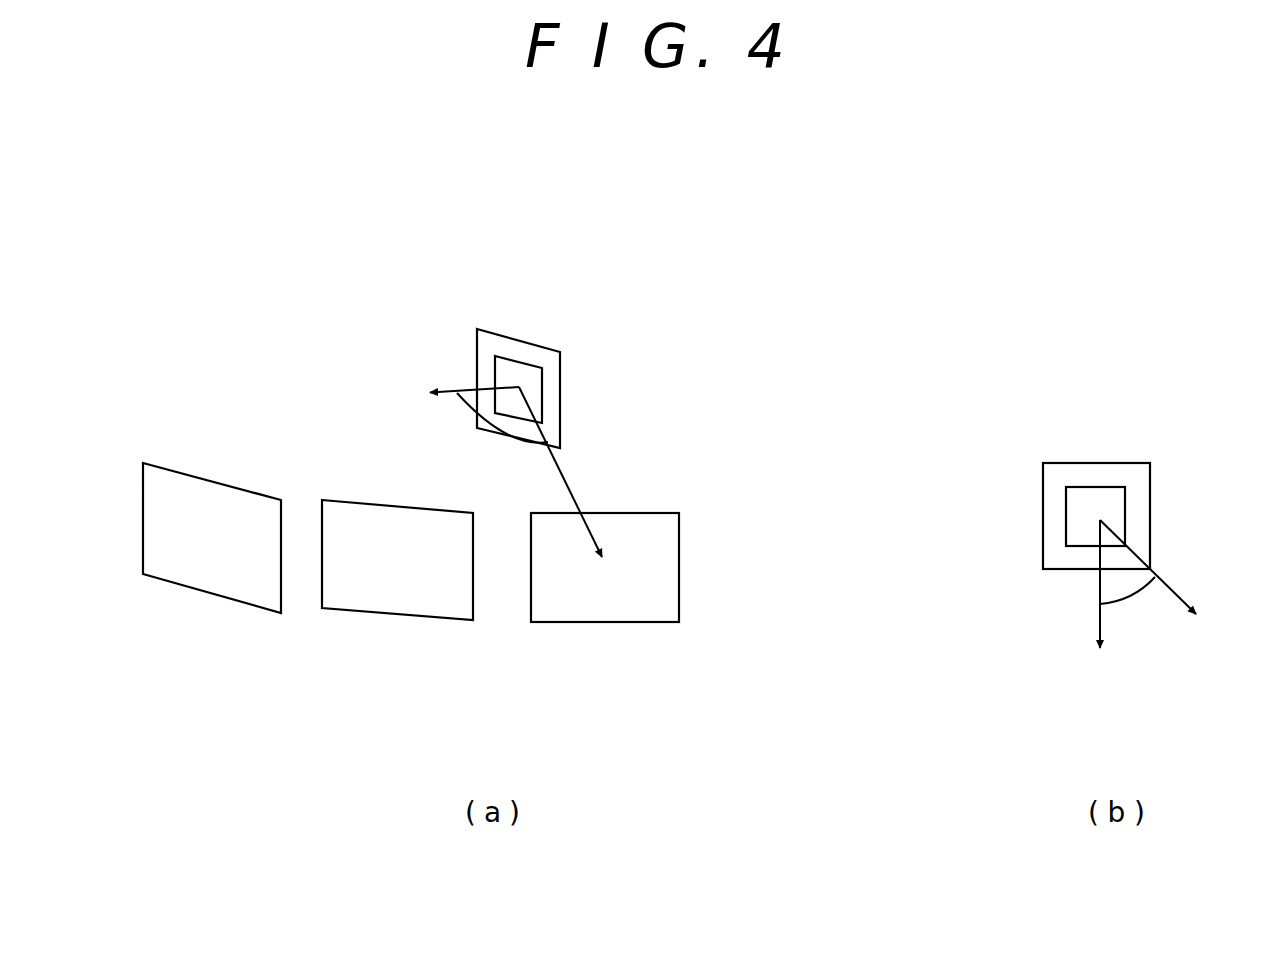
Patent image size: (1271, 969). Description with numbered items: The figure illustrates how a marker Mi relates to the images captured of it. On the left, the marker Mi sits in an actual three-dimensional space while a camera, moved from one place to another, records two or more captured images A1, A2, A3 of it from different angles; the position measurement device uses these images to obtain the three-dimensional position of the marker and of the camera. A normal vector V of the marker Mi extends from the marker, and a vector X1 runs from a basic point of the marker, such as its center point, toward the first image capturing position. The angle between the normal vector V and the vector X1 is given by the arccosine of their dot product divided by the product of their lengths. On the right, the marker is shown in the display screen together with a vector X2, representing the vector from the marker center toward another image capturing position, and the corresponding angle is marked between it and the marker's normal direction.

The marker Mi is at (552, 348).
The normal vector of the marker V is at (474, 374).
The image capturing position vector X1 is at (561, 472).
The captured image A1 is at (190, 587).
The captured image A2 is at (372, 612).
The captured image A3 is at (572, 623).
The image capturing position vector X2 is at (1072, 570).